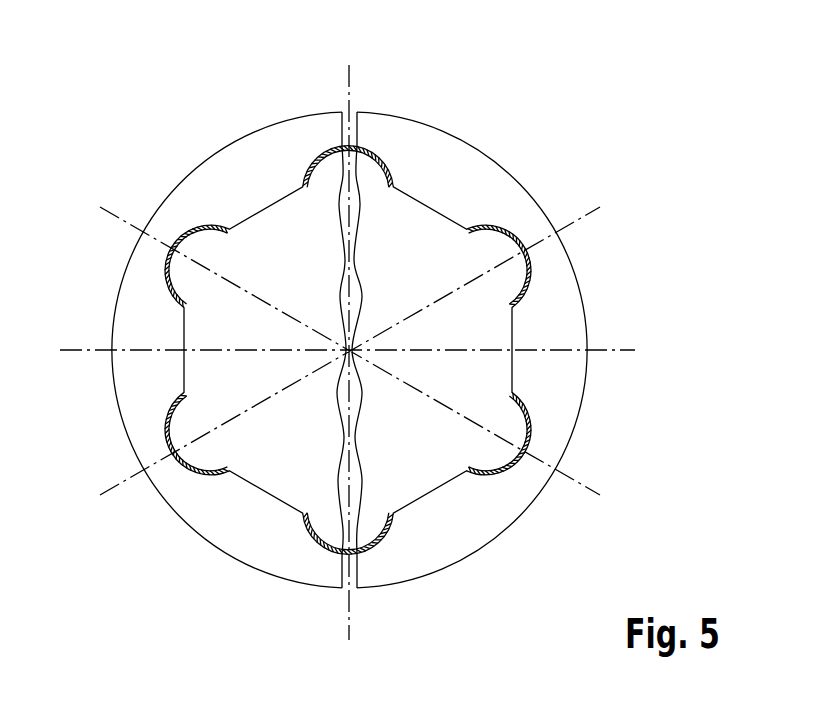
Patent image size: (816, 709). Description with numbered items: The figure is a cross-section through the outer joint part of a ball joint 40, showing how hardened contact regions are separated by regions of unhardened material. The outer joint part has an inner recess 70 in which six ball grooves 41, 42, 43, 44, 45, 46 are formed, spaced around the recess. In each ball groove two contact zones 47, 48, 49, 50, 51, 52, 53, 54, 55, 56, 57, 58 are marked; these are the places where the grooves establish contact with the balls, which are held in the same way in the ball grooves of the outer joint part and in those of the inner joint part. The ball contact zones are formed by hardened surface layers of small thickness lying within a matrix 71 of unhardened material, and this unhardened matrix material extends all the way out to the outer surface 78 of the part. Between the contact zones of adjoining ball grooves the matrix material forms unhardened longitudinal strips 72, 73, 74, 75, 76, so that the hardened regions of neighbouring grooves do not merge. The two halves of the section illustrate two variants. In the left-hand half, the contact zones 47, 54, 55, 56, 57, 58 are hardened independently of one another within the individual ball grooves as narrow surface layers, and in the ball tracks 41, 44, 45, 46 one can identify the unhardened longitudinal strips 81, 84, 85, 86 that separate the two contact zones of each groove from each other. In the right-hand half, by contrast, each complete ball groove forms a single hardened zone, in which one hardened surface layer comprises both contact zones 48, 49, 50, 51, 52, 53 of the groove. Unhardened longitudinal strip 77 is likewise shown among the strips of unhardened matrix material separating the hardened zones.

The ball joint 40 is at (493, 110).
The ball groove 41 is at (366, 152).
The ball groove 42 is at (530, 245).
The ball groove 43 is at (513, 437).
The ball groove 44 is at (358, 560).
The ball groove 45 is at (185, 455).
The ball groove 46 is at (183, 262).
The contact zone 47 is at (322, 158).
The contact zone 48 is at (378, 162).
The contact zone 49 is at (503, 230).
The contact zone 50 is at (513, 273).
The contact zone 51 is at (512, 418).
The contact zone 52 is at (508, 470).
The contact zone 53 is at (365, 538).
The contact zone 54 is at (315, 542).
The contact zone 55 is at (190, 470).
The contact zone 56 is at (167, 420).
The contact zone 57 is at (166, 280).
The contact zone 58 is at (185, 237).
The inner recess 70 is at (378, 306).
The matrix 71 is at (433, 196).
The unhardened longitudinal strip 72 is at (432, 208).
The unhardened longitudinal strip 73 is at (510, 310).
The unhardened longitudinal strip 74 is at (447, 480).
The unhardened longitudinal strip 75 is at (270, 490).
The unhardened longitudinal strip 76 is at (185, 332).
The web 77 is at (270, 205).
The outer surface 78 is at (217, 150).
The unhardened longitudinal strip 81 is at (333, 172).
The unhardened longitudinal strip 84 is at (337, 553).
The unhardened longitudinal strip 85 is at (183, 425).
The unhardened longitudinal strip 86 is at (178, 248).